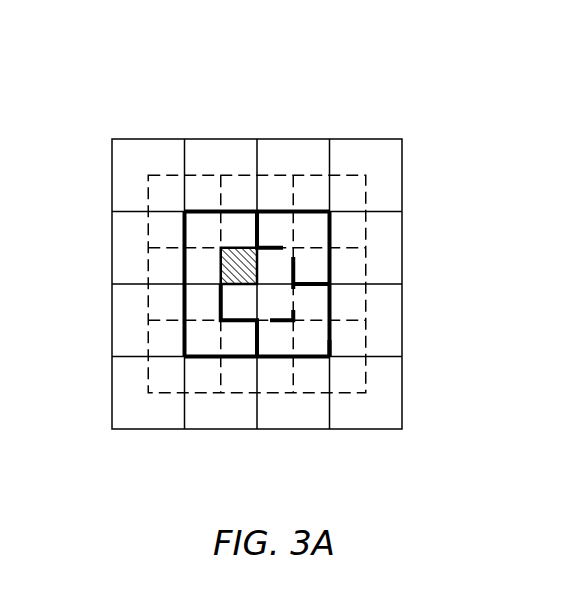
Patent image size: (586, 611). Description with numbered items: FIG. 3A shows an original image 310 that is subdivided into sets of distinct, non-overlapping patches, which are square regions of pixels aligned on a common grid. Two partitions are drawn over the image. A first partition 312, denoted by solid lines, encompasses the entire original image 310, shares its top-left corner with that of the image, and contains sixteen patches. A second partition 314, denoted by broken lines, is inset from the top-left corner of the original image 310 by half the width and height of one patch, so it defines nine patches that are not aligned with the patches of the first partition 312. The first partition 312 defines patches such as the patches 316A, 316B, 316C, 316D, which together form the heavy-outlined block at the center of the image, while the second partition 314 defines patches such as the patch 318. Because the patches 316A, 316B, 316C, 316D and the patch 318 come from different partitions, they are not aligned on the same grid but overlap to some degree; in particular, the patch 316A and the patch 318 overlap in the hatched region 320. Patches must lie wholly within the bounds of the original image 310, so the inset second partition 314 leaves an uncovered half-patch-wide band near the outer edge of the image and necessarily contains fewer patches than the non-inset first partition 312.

The original image 310 is at (262, 258).
The first partition 312 is at (111, 139).
The second partition 314 is at (148, 176).
The patch 316A is at (184, 212).
The patch 316B is at (262, 212).
The patch 316C is at (184, 341).
The patch 316D is at (328, 357).
The patch 318 is at (293, 257).
The overlap region 320 is at (220, 272).